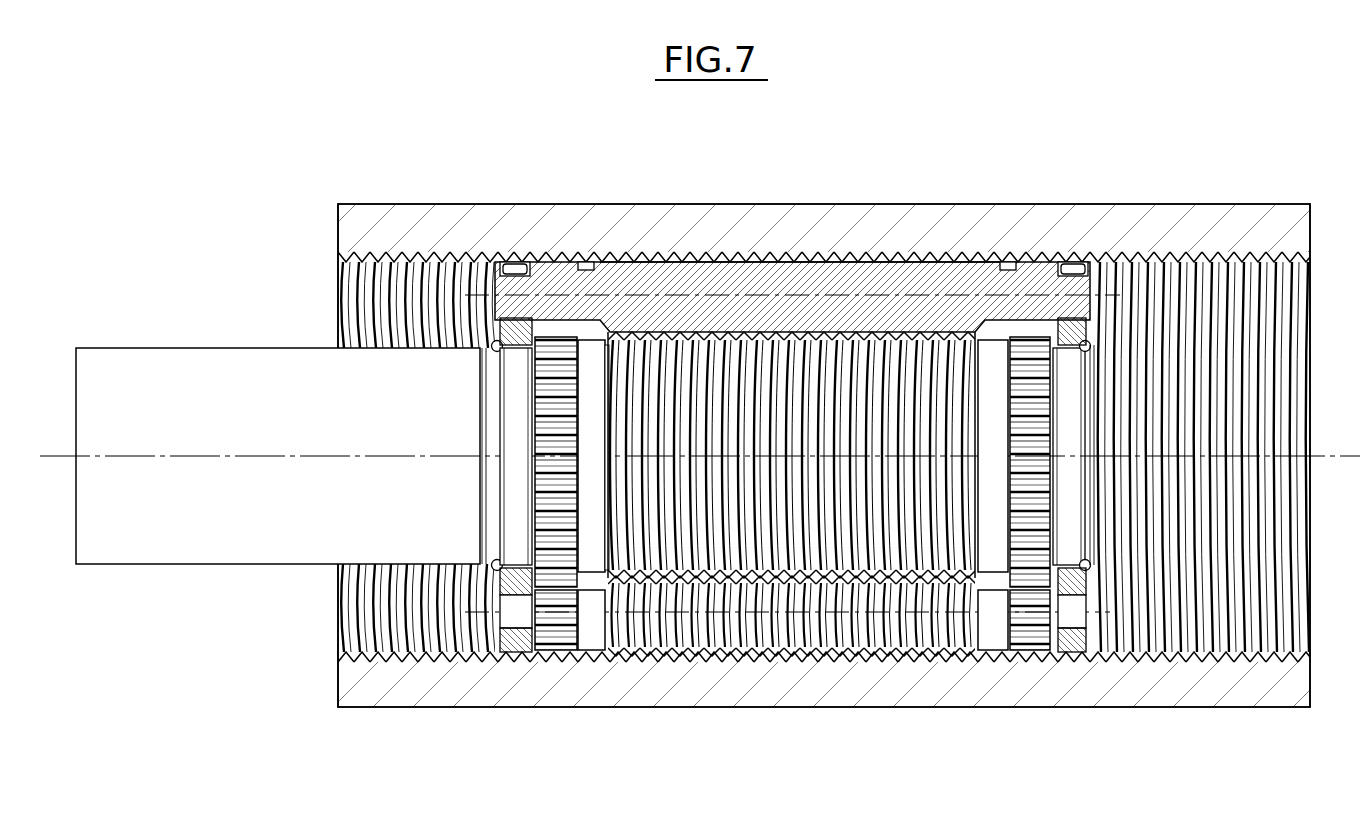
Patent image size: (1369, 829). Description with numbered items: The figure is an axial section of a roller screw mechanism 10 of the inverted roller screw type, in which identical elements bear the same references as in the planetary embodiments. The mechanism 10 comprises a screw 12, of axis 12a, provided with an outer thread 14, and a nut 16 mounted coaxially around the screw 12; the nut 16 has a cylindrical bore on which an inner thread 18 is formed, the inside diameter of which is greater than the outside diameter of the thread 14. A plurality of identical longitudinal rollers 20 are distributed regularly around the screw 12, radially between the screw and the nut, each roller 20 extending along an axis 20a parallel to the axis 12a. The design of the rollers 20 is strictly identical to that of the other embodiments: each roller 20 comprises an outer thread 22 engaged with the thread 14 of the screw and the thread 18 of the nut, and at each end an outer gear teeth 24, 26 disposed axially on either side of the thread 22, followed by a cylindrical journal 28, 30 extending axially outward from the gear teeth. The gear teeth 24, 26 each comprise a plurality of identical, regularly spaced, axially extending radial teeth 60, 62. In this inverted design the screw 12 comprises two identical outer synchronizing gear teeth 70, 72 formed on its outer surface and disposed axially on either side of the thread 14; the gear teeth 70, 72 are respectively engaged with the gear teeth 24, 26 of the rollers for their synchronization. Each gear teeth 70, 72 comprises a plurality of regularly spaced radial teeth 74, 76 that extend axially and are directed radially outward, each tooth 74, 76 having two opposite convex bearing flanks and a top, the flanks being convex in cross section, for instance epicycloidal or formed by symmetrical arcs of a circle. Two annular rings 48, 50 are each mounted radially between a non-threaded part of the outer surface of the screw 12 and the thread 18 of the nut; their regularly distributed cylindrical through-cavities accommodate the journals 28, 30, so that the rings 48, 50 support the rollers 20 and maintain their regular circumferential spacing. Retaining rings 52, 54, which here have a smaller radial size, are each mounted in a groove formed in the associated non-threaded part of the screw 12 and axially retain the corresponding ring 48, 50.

The roller screw mechanism 10 is at (1082, 160).
The screw 12 is at (232, 348).
The axis 12a is at (1337, 455).
The outer thread 14 is at (752, 655).
The nut 16 is at (568, 204).
The inner thread 18 is at (370, 268).
The rollers 20 is at (840, 312).
The roller axis 20a is at (1089, 342).
The outer thread 22 is at (905, 255).
The gear teeth 24 is at (605, 625).
The gear teeth 26 is at (990, 637).
The cylindrical journal 28 is at (515, 620).
The cylindrical journal 30 is at (1073, 620).
The annular ring 48 is at (521, 265).
The annular ring 50 is at (1068, 265).
The retaining ring 52 is at (492, 340).
The retaining ring 54 is at (1092, 347).
The radial teeth 60 is at (556, 618).
The radial teeth 62 is at (1040, 620).
The synchronizing gear teeth 70 is at (520, 437).
The synchronizing gear teeth 72 is at (1064, 437).
The radial teeth 74 is at (542, 477).
The radial teeth 76 is at (1048, 477).